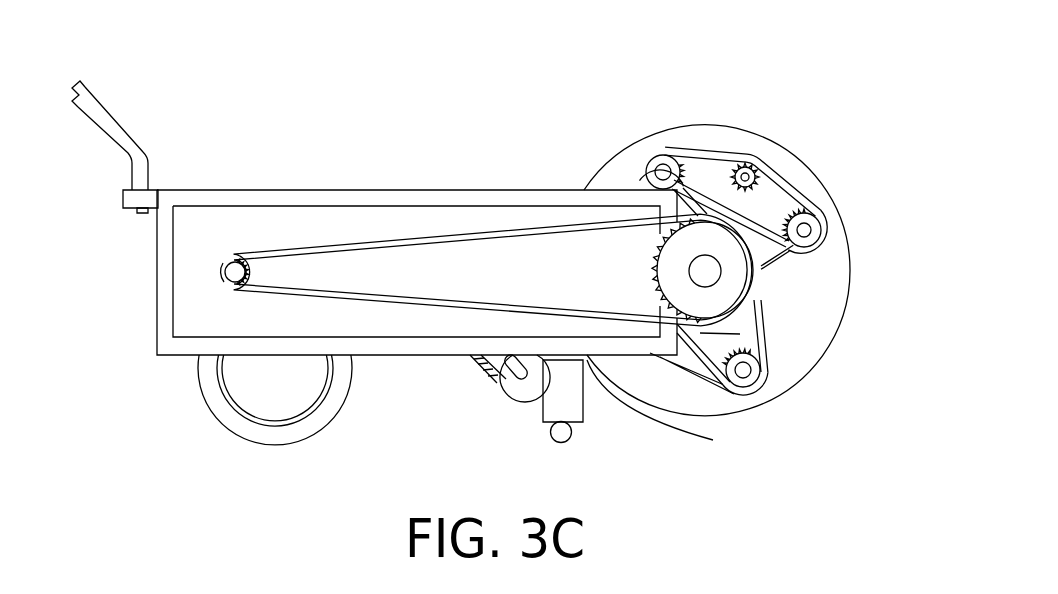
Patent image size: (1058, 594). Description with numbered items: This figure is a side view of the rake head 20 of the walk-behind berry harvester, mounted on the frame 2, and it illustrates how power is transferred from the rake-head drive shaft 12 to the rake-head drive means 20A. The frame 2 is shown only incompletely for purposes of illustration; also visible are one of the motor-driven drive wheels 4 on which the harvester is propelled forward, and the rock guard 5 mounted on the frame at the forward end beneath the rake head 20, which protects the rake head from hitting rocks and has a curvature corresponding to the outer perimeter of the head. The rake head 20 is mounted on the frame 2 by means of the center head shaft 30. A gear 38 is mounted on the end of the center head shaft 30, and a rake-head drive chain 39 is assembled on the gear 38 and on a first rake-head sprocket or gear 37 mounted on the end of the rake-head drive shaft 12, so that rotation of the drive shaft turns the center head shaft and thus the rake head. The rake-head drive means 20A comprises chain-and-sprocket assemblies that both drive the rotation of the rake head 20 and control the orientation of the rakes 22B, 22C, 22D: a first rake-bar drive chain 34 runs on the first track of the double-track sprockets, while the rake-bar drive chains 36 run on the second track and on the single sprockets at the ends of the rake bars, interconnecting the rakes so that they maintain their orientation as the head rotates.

The frame 2 is at (296, 190).
The drive wheels 4 is at (327, 418).
The rock guard 5 is at (661, 436).
The rake-head drive shaft 12 is at (232, 262).
The rake head 20 is at (760, 108).
The rake-head drive means 20A is at (740, 334).
The rake 22B is at (746, 372).
The rake 22C is at (806, 231).
The rake 22D is at (662, 164).
The center head shaft 30 is at (712, 270).
The first rake-bar drive chain 34 is at (638, 187).
The rake-bar drive chain 36 is at (725, 157).
The first rake-head sprocket or gear 37 is at (220, 282).
The gear 38 is at (735, 292).
The rake-head drive chain 39 is at (462, 236).